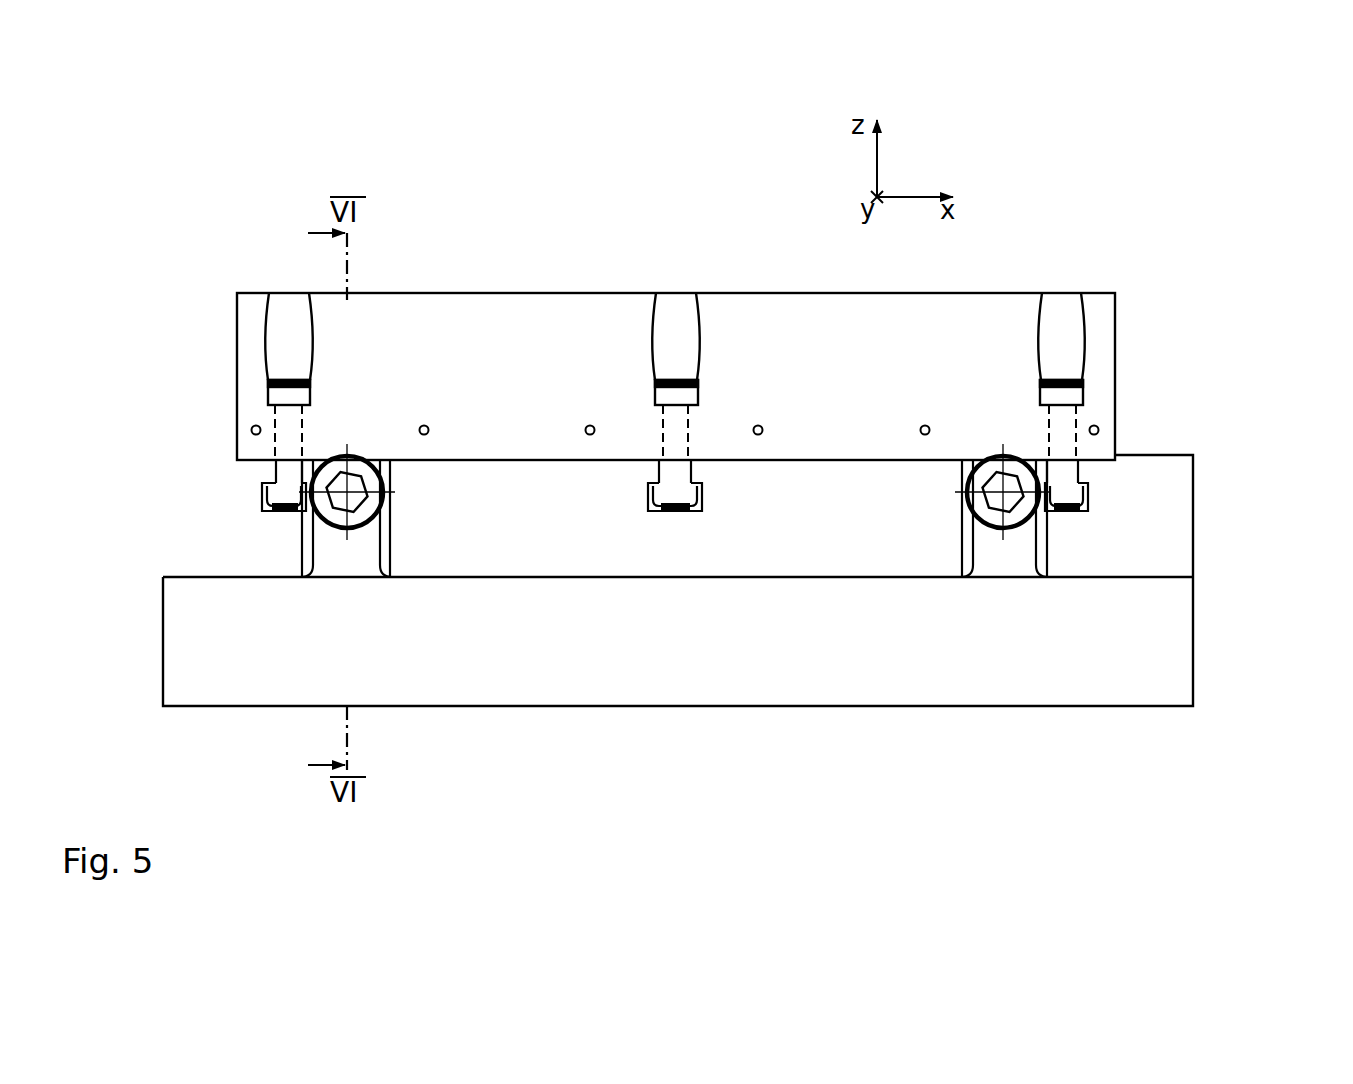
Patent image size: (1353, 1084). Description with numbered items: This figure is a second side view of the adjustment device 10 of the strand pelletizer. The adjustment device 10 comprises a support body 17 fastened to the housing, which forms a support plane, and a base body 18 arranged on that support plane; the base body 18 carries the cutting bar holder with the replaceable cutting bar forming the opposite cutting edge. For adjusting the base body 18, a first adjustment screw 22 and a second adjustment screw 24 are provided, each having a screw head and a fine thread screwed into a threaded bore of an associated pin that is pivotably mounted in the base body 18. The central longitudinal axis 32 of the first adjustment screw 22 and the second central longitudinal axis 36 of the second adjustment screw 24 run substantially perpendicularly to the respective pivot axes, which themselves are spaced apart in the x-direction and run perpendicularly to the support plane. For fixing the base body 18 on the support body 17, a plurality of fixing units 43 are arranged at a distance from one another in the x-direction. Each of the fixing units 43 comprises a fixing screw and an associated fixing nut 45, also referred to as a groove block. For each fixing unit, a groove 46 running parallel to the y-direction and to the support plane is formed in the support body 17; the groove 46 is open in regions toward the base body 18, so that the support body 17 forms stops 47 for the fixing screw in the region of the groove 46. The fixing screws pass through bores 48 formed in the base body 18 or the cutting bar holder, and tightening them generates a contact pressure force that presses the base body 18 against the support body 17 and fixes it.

The adjustment device 10 is at (1222, 447).
The support body 17 is at (1200, 625).
The base body 18 is at (1120, 381).
The first adjustment screw 22 is at (329, 537).
The second adjustment screw 24 is at (1013, 540).
The central longitudinal axis 32 is at (365, 510).
The second central longitudinal axis 36 is at (993, 512).
The fixing units 43 is at (286, 370).
The fixing nut 45 is at (662, 471).
The groove 46 is at (1092, 507).
The stops 47 is at (1092, 494).
The bores 48 is at (692, 432).